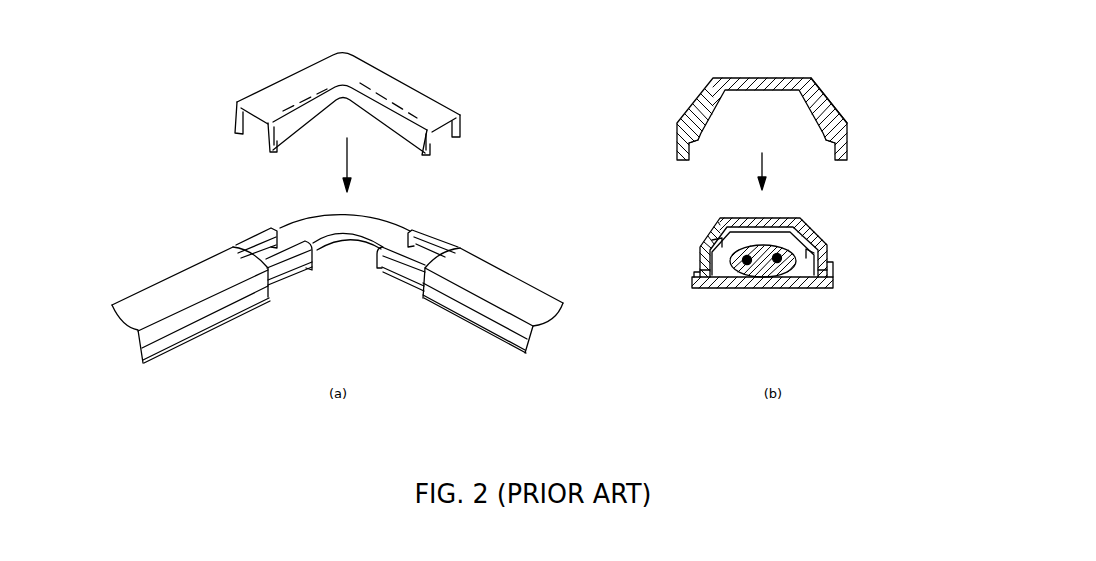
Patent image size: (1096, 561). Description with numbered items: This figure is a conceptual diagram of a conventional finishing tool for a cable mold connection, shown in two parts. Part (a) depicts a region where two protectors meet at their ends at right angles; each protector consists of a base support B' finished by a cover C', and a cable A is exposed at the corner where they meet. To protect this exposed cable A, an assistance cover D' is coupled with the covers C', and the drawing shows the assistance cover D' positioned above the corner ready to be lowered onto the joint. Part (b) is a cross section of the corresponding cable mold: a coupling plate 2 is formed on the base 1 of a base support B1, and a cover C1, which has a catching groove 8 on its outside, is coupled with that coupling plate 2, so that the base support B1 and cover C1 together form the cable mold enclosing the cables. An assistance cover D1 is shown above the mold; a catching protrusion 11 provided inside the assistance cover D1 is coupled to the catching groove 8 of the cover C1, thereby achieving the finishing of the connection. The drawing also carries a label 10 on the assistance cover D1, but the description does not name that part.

The assistance cover D' is at (347, 89).
The cable A is at (357, 228).
The cover C' is at (337, 295).
The base support B' is at (345, 299).
The assistance cover D1 is at (833, 78).
The cover side wall 10 is at (830, 104).
The catching protrusion 11 is at (700, 138).
The cover C1 is at (835, 243).
The coupling plate 2 is at (707, 255).
The catching groove 8 is at (697, 272).
The base 1 is at (758, 281).
The base support B1 is at (805, 303).